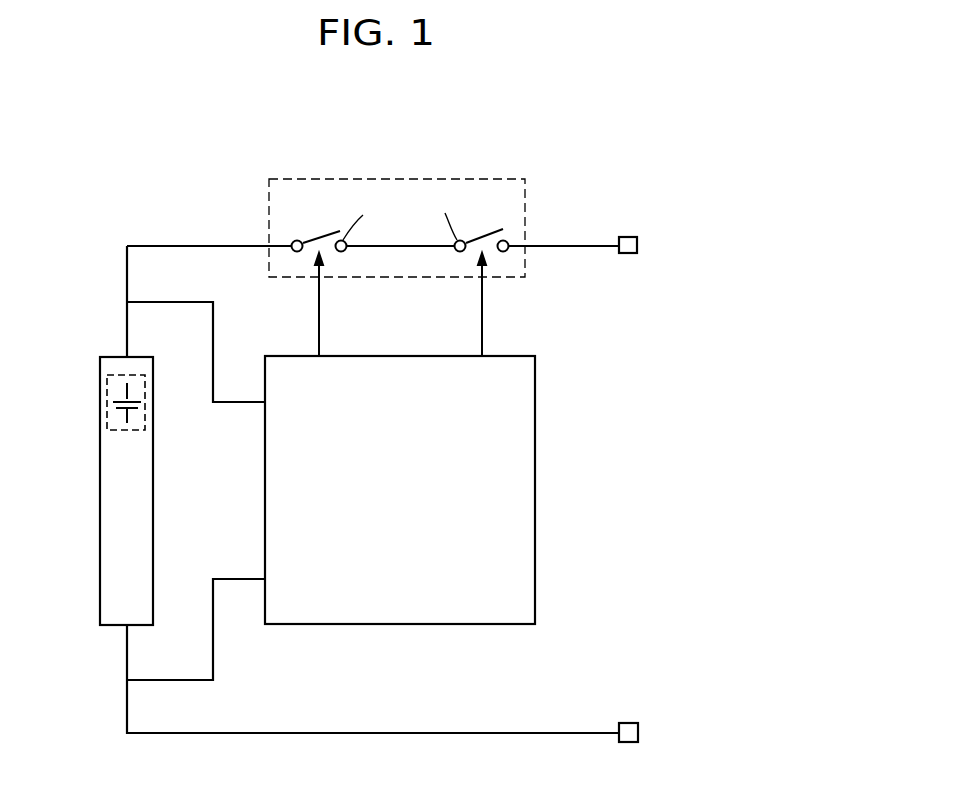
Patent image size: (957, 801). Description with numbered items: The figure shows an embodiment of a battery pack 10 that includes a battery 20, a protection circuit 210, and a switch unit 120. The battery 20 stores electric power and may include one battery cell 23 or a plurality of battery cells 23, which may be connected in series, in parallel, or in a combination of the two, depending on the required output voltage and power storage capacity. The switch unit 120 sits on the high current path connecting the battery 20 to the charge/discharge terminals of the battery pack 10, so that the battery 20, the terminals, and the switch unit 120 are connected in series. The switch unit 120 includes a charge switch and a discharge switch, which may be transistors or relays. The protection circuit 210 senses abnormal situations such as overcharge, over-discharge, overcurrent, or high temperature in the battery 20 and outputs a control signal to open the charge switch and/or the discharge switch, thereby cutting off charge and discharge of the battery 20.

The battery pack 10 is at (722, 150).
The battery 20 is at (132, 357).
The battery cell 23 is at (107, 402).
The switch unit 120 is at (500, 179).
The protection circuit 210 is at (499, 356).